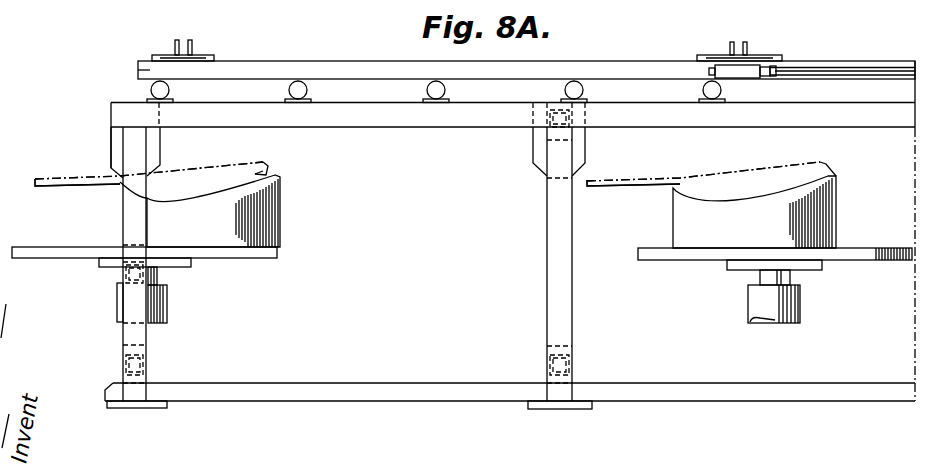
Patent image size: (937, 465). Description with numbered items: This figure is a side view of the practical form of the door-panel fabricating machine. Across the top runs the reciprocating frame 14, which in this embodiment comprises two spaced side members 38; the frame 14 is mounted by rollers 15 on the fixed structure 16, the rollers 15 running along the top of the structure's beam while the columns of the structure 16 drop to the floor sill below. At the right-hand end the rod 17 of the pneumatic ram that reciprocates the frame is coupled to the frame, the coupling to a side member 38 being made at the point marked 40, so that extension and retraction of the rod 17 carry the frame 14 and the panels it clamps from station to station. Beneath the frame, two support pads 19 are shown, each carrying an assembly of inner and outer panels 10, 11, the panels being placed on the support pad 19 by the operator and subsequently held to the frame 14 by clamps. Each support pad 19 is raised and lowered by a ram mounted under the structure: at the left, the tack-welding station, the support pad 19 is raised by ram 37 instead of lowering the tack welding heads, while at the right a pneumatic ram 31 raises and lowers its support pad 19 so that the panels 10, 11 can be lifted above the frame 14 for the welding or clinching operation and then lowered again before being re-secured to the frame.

The frame 14 is at (344, 44).
The side member 38 is at (592, 71).
The rollers 15 is at (427, 90).
The pneumatic ram 40 is at (712, 71).
The rod 17 is at (873, 45).
The structure 16 is at (210, 392).
The support pad 19 is at (213, 234).
The inner panel 10 is at (276, 166).
The outer panel 11 is at (276, 166).
The ram 37 is at (163, 301).
The pneumatic ram 31 is at (756, 308).